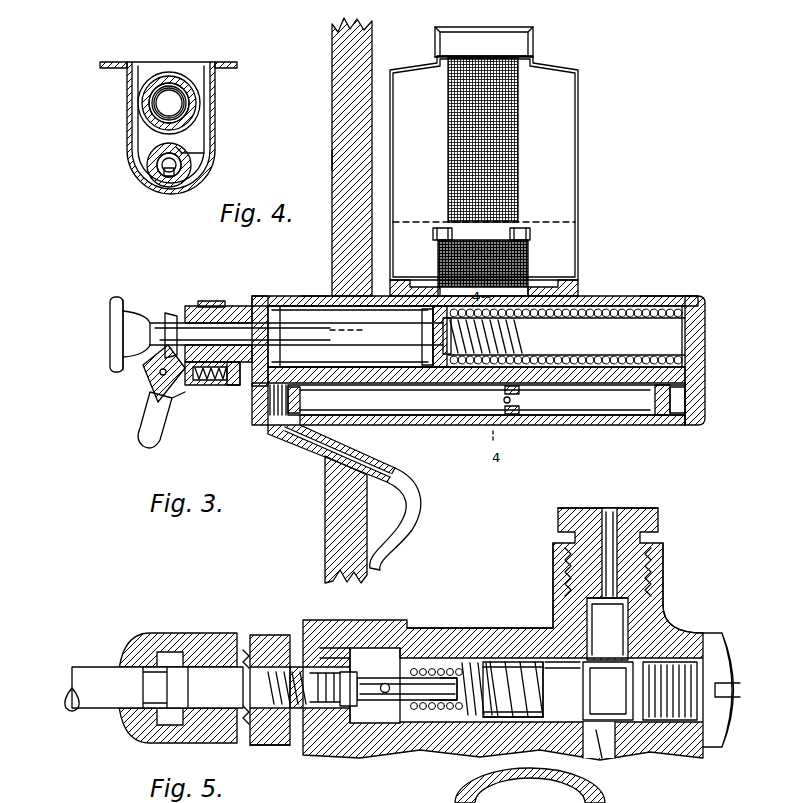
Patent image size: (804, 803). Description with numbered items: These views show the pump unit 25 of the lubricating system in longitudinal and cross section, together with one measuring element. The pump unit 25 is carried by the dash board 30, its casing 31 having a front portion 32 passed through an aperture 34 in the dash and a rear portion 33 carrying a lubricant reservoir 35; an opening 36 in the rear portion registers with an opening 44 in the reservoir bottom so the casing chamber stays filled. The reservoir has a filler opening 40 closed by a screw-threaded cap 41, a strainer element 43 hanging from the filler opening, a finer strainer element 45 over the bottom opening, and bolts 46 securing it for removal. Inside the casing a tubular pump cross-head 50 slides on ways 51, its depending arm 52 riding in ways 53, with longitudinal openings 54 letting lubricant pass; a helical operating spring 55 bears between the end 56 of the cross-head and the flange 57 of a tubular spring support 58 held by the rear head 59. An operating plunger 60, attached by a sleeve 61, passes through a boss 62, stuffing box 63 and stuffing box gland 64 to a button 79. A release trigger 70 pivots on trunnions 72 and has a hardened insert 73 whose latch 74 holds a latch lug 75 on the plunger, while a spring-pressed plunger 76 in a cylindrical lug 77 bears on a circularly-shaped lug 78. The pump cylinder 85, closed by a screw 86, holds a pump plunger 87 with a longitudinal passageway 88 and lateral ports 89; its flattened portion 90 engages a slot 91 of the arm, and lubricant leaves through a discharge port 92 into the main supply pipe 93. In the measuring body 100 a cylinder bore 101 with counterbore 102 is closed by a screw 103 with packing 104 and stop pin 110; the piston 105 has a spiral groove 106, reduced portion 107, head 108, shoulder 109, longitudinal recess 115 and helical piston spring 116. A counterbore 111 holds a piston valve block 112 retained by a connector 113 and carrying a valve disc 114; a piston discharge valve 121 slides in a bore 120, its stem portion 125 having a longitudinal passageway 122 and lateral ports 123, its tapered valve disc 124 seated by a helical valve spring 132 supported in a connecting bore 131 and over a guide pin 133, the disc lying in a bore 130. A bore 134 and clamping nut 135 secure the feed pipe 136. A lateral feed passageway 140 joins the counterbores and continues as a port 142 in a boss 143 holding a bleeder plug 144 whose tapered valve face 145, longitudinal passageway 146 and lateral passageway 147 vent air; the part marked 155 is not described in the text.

In FIG. 3, the pump unit 25 is at (100, 406).
In FIG. 3, the dash board 30 is at (331, 155).
In FIG. 3, the casing 31 is at (585, 296).
In FIG. 3, the front portion 32 is at (300, 295).
In FIG. 3, the rear portion 33 is at (655, 296).
In FIG. 3, the aperture 34 is at (332, 250).
In FIG. 3, the lubricant reservoir 35 is at (578, 176).
In FIG. 3, the opening 36 is at (528, 292).
In FIG. 3, the filler opening 40 is at (500, 33).
In FIG. 3, the screw-threaded cap 41 is at (534, 46).
In FIG. 3, the strainer element 43 is at (510, 137).
In FIG. 3, the opening 44 is at (437, 286).
In FIG. 3, the strainer element 45 is at (529, 256).
In FIG. 3, the bolts 46 is at (437, 229).
In FIG. 3, the pump cross-head 50 is at (620, 309).
In FIG. 4, the pump cross-head 50 is at (170, 76).
In FIG. 3, the ways 51 is at (288, 305).
In FIG. 4, the ways 51 is at (150, 73).
In FIG. 3, the depending arm 52 is at (690, 378).
In FIG. 4, the depending arm 52 is at (136, 148).
In FIG. 4, the ways 53 is at (212, 176).
In FIG. 4, the longitudinal openings 54 is at (189, 108).
In FIG. 3, the helical operating spring 55 is at (516, 341).
In FIG. 4, the helical operating spring 55 is at (186, 96).
In FIG. 3, the end 56 is at (428, 328).
In FIG. 3, the flange 57 is at (697, 309).
In FIG. 3, the tubular spring support 58 is at (675, 333).
In FIG. 4, the tubular spring support 58 is at (186, 106).
In FIG. 3, the rear head 59 is at (690, 349).
In FIG. 3, the operating plunger 60 is at (312, 345).
In FIG. 3, the sleeve 61 is at (444, 340).
In FIG. 3, the boss 62 is at (258, 306).
In FIG. 3, the stuffing box 63 is at (222, 298).
In FIG. 3, the stuffing box gland 64 is at (200, 308).
In FIG. 3, the release trigger 70 is at (147, 420).
In FIG. 3, the trunnion 72 is at (272, 339).
In FIG. 3, the hardened insert 73 is at (176, 398).
In FIG. 3, the latch 74 is at (156, 344).
In FIG. 3, the latch lug 75 is at (168, 318).
In FIG. 3, the spring-pressed plunger 76 is at (196, 384).
In FIG. 3, the cylindrical lug 77 is at (233, 386).
In FIG. 3, the circularly-shaped lug 78 is at (150, 376).
In FIG. 3, the button 79 is at (110, 321).
In FIG. 3, the pump cylinder 85 is at (295, 428).
In FIG. 4, the pump cylinder 85 is at (148, 166).
In FIG. 3, the screw 86 is at (268, 405).
In FIG. 3, the pump plunger 87 is at (570, 416).
In FIG. 4, the pump plunger 87 is at (162, 176).
In FIG. 3, the longitudinal passageway 88 is at (478, 426).
In FIG. 4, the longitudinal passageway 88 is at (172, 184).
In FIG. 3, the lateral ports 89 is at (514, 390).
In FIG. 4, the lateral ports 89 is at (196, 160).
In FIG. 3, the flattened portion 90 is at (681, 399).
In FIG. 3, the slot 91 is at (660, 388).
In FIG. 4, the slot 91 is at (183, 148).
In FIG. 3, the discharge port 92 is at (310, 436).
In FIG. 3, the main supply pipe 93 is at (418, 512).
In FIG. 5, the body 100 is at (393, 626).
In FIG. 5, the cylinder bore 101 is at (450, 640).
In FIG. 5, the counterbore 102 is at (688, 630).
In FIG. 5, the screw 103 is at (730, 642).
In FIG. 5, the packing 104 is at (735, 700).
In FIG. 5, the piston 105 is at (520, 660).
In FIG. 5, the spiral groove 106 is at (520, 735).
In FIG. 5, the reduced portion 107 is at (592, 722).
In FIG. 5, the head 108 is at (612, 723).
In FIG. 5, the shoulder 109 is at (565, 655).
In FIG. 5, the stop pin 110 is at (665, 723).
In FIG. 5, the counterbore 111 is at (402, 702).
In FIG. 5, the piston valve block 112 is at (372, 712).
In FIG. 5, the connector 113 is at (250, 632).
In FIG. 5, the valve disc 114 is at (412, 702).
In FIG. 5, the longitudinal recess 115 is at (545, 740).
In FIG. 5, the helical piston spring 116 is at (438, 704).
In FIG. 5, the bore 120 is at (380, 672).
In FIG. 5, the piston discharge valve 121 is at (350, 676).
In FIG. 5, the longitudinal passageway 122 is at (425, 655).
In FIG. 5, the lateral ports 123 is at (385, 694).
In FIG. 5, the valve disc 124 is at (330, 645).
In FIG. 5, the stem portion 125 is at (478, 660).
In FIG. 5, the bore 130 is at (280, 650).
In FIG. 5, the connecting bore 131 is at (252, 645).
In FIG. 5, the helical valve spring 132 is at (255, 743).
In FIG. 5, the guide pin 133 is at (332, 692).
In FIG. 5, the bore 134 is at (172, 652).
In FIG. 5, the clamping nut 135 is at (142, 640).
In FIG. 5, the feed pipe 136 is at (88, 666).
In FIG. 5, the lateral feed passageway 140 is at (606, 740).
In FIG. 5, the port 142 is at (670, 600).
In FIG. 5, the boss 143 is at (660, 566).
In FIG. 5, the bleeder plug 144 is at (650, 520).
In FIG. 5, the tapered valve face 145 is at (607, 629).
In FIG. 5, the longitudinal passageway 146 is at (612, 512).
In FIG. 5, the lateral passageway 147 is at (563, 585).
In FIG. 5, the housing 155 is at (478, 795).